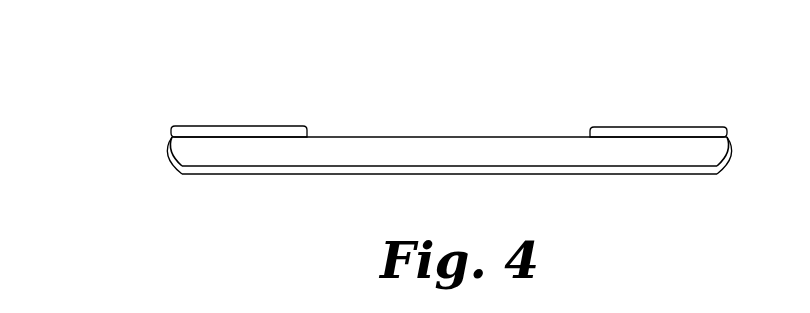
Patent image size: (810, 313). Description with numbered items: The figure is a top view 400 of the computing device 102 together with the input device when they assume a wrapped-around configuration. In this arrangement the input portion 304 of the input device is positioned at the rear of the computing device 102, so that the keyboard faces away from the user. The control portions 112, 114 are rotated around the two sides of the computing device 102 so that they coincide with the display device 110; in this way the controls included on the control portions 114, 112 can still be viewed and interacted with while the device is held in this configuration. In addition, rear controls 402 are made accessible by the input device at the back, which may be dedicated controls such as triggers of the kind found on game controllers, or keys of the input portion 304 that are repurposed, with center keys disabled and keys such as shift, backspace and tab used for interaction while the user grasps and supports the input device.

The top view 400 is at (155, 83).
The display device 110 is at (412, 136).
The computing device 102 is at (449, 151).
The input portion 304 is at (352, 176).
The rear controls 402 is at (655, 176).
The control portion 114 is at (252, 126).
The control portion 112 is at (660, 127).